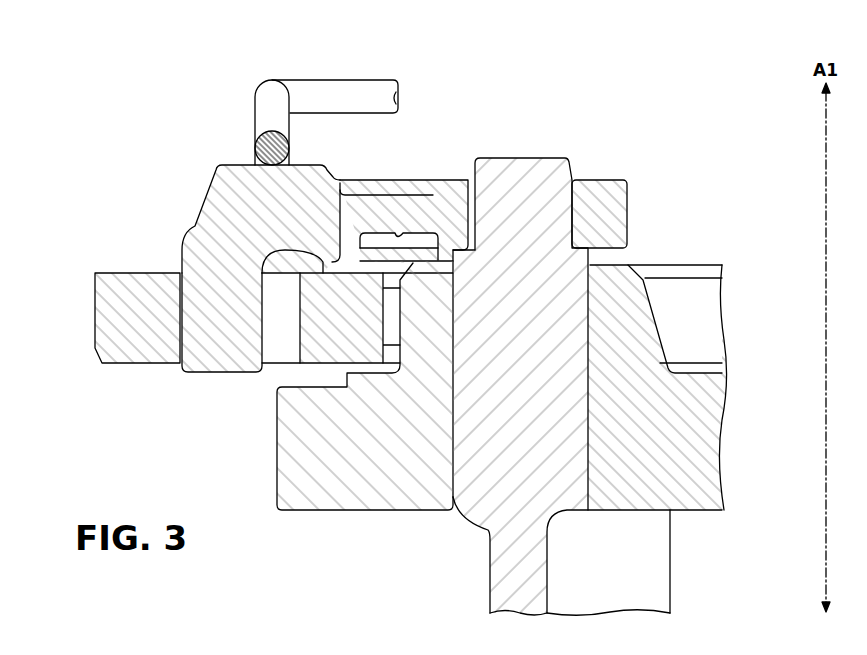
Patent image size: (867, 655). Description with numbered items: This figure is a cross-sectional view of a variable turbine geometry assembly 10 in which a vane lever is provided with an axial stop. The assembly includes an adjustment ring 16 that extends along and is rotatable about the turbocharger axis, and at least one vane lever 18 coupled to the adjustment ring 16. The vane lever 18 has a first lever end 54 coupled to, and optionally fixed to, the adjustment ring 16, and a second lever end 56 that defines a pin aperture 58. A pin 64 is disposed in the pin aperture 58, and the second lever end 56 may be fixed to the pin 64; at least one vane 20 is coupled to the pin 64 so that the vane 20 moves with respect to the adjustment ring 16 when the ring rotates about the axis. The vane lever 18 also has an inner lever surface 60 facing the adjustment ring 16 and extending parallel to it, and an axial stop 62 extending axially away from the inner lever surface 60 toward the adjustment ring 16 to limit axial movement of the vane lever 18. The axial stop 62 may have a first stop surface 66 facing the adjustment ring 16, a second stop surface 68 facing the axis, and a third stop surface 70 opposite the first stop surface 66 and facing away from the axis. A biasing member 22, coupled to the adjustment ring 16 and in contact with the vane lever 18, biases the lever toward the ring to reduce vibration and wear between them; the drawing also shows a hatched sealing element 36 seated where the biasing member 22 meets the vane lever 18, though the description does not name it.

The variable turbine geometry assembly 10 is at (688, 122).
The adjustment ring 16 is at (105, 316).
The vane lever 18 is at (387, 215).
The vane 20 is at (638, 572).
The biasing member 22 is at (332, 90).
The O-ring seal 36 is at (258, 164).
The first lever end 54 is at (207, 343).
The second lever end 56 is at (607, 209).
The pin aperture 58 is at (568, 218).
The inner lever surface 60 is at (262, 266).
The axial stop 62 is at (333, 258).
The pin 64 is at (525, 343).
The first stop surface 66 is at (345, 352).
The second stop surface 68 is at (470, 250).
The third stop surface 70 is at (288, 256).